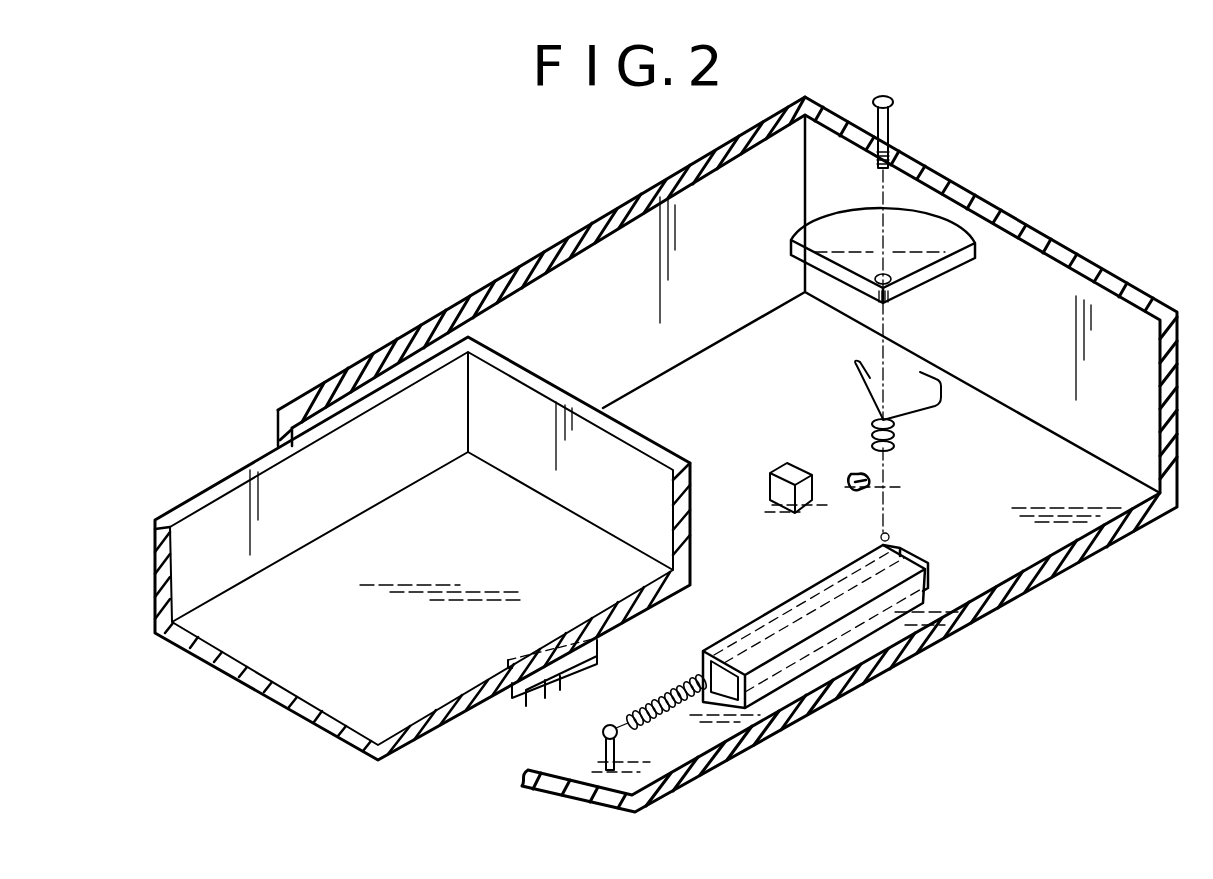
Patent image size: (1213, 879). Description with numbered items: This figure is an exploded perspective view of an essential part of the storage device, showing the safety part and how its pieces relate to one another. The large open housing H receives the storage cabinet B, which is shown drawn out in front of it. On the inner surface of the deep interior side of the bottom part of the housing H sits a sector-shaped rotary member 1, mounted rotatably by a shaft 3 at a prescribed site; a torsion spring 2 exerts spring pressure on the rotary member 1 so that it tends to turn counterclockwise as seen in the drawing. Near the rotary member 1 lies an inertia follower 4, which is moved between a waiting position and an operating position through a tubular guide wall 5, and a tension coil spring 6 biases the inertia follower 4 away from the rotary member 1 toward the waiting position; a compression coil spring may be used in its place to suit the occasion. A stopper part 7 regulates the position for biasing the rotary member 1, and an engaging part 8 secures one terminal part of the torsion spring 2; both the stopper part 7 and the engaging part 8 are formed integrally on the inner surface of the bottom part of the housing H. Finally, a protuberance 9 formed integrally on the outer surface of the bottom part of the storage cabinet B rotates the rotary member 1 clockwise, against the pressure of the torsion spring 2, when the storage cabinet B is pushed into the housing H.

The housing H is at (1033, 318).
The storage cabinet B is at (332, 676).
The sector-shaped rotary member 1 is at (917, 232).
The torsion spring 2 is at (897, 441).
The shaft 3 is at (892, 133).
The inertia follower 4 is at (915, 555).
The tubular guide wall 5 is at (852, 617).
The tension coil spring 6 is at (690, 705).
The stopper part 7 is at (780, 468).
The engaging part 8 is at (860, 473).
The protuberance 9 is at (550, 690).